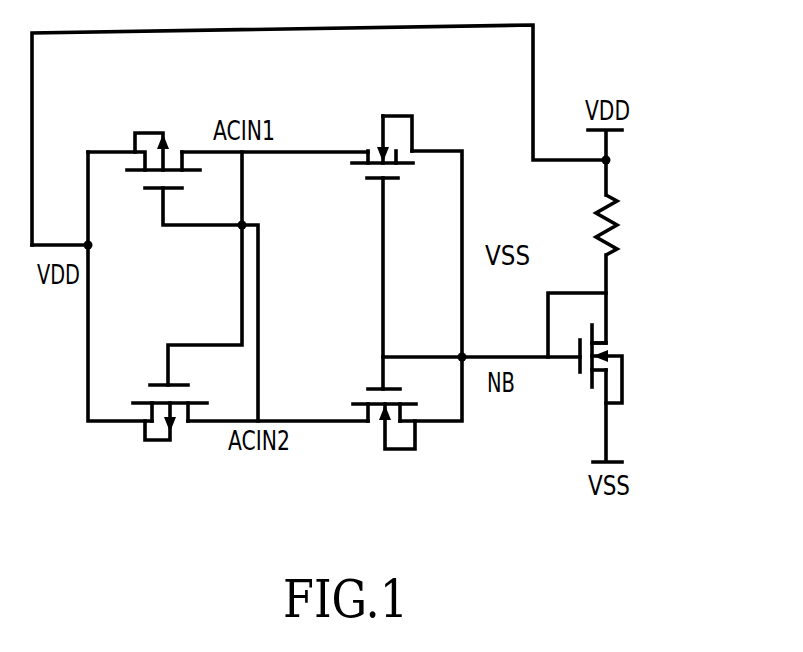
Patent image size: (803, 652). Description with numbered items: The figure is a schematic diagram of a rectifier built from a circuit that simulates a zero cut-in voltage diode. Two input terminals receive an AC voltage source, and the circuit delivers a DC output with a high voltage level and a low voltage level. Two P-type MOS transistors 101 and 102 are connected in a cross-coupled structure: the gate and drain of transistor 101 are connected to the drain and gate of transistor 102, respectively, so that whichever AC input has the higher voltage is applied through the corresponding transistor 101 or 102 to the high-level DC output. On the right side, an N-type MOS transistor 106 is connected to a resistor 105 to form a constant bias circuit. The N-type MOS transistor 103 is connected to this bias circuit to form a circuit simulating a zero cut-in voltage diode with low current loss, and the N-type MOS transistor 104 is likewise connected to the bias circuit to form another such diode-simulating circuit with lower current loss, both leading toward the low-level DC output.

The P-type MOS transistor 101 is at (157, 118).
The P-type MOS transistor 102 is at (142, 448).
The N-type MOS transistor 103 is at (365, 188).
The N-type MOS transistor 104 is at (372, 442).
The resistor 105 is at (622, 212).
The N-type MOS transistor 106 is at (628, 340).